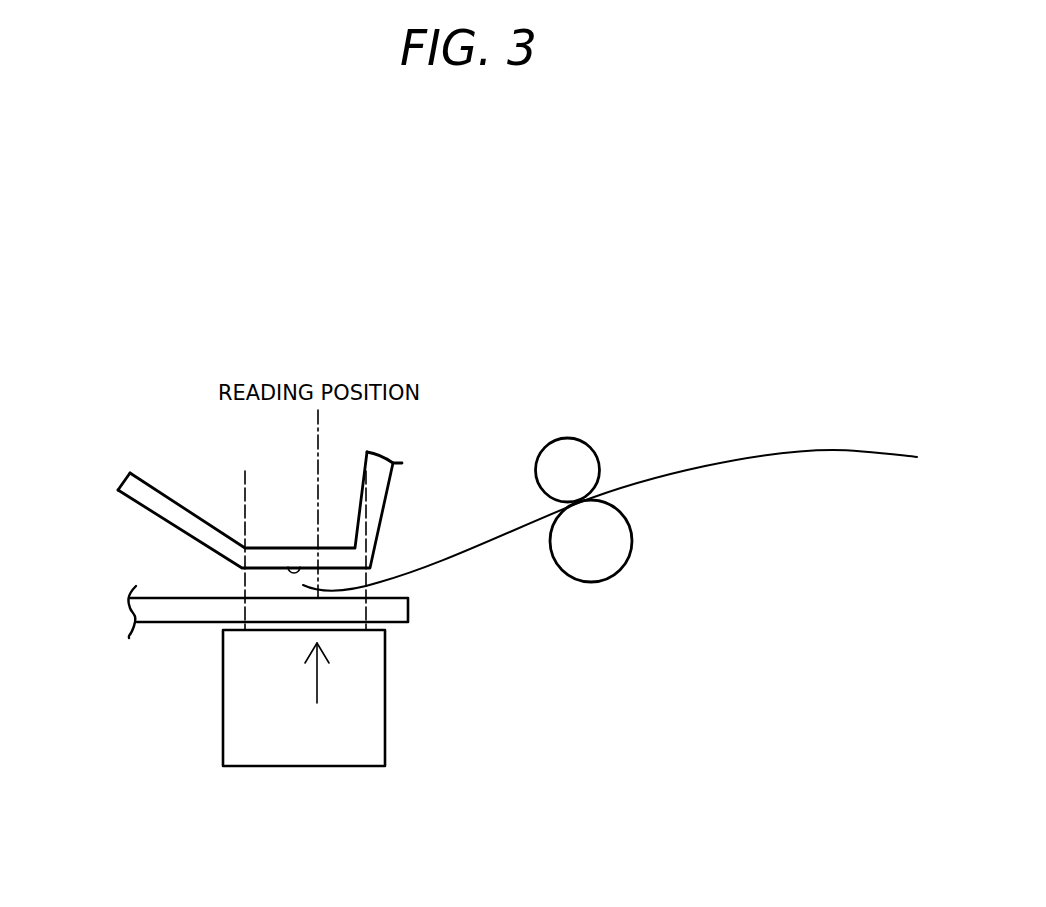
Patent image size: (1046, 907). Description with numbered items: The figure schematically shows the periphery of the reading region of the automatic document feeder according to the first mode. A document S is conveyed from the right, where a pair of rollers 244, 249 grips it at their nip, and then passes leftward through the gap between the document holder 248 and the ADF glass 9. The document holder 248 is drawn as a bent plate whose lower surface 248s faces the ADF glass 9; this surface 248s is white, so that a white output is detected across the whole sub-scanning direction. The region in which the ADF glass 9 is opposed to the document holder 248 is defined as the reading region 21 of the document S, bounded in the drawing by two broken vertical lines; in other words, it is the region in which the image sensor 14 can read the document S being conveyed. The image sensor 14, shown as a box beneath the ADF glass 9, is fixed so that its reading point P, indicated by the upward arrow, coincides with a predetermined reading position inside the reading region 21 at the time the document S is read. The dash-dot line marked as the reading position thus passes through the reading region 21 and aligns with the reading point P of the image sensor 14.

The document holder 248 is at (150, 505).
The surface 248s is at (291, 567).
The reading region 21 is at (272, 582).
The ADF glass 9 is at (173, 622).
The image sensor 14 is at (223, 713).
The reading point P is at (317, 692).
The conveying roller 244 is at (572, 450).
The conveying roller 249 is at (602, 560).
The document S is at (807, 450).